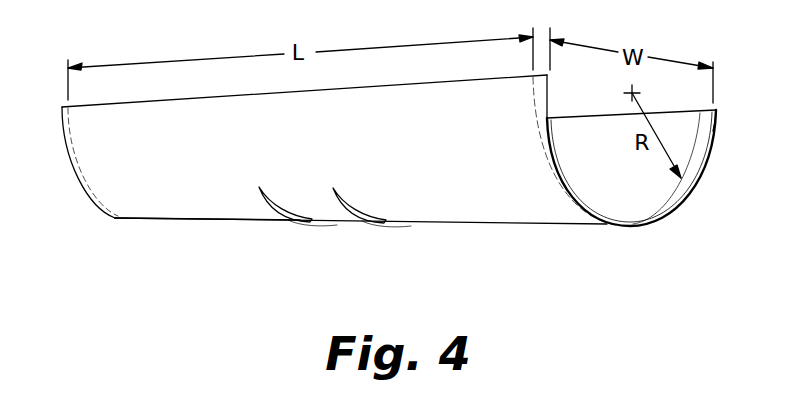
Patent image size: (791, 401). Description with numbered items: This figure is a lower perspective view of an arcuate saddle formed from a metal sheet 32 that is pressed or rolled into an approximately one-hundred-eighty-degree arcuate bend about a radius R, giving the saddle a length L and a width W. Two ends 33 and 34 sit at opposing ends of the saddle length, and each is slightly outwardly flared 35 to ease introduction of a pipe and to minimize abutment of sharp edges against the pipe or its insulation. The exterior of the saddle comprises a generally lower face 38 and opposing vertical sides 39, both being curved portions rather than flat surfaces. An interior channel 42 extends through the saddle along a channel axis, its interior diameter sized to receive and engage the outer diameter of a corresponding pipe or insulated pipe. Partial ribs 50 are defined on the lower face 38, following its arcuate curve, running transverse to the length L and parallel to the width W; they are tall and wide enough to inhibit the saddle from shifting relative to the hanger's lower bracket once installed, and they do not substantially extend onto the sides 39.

The metal sheet 32 is at (465, 211).
The end 33 is at (632, 193).
The end 34 is at (85, 157).
The outwardly flared portion 35 is at (115, 219).
The lower face 38 is at (200, 219).
The vertical sides 39 is at (340, 143).
The interior channel 42 is at (663, 133).
The partial ribs 50 is at (288, 217).